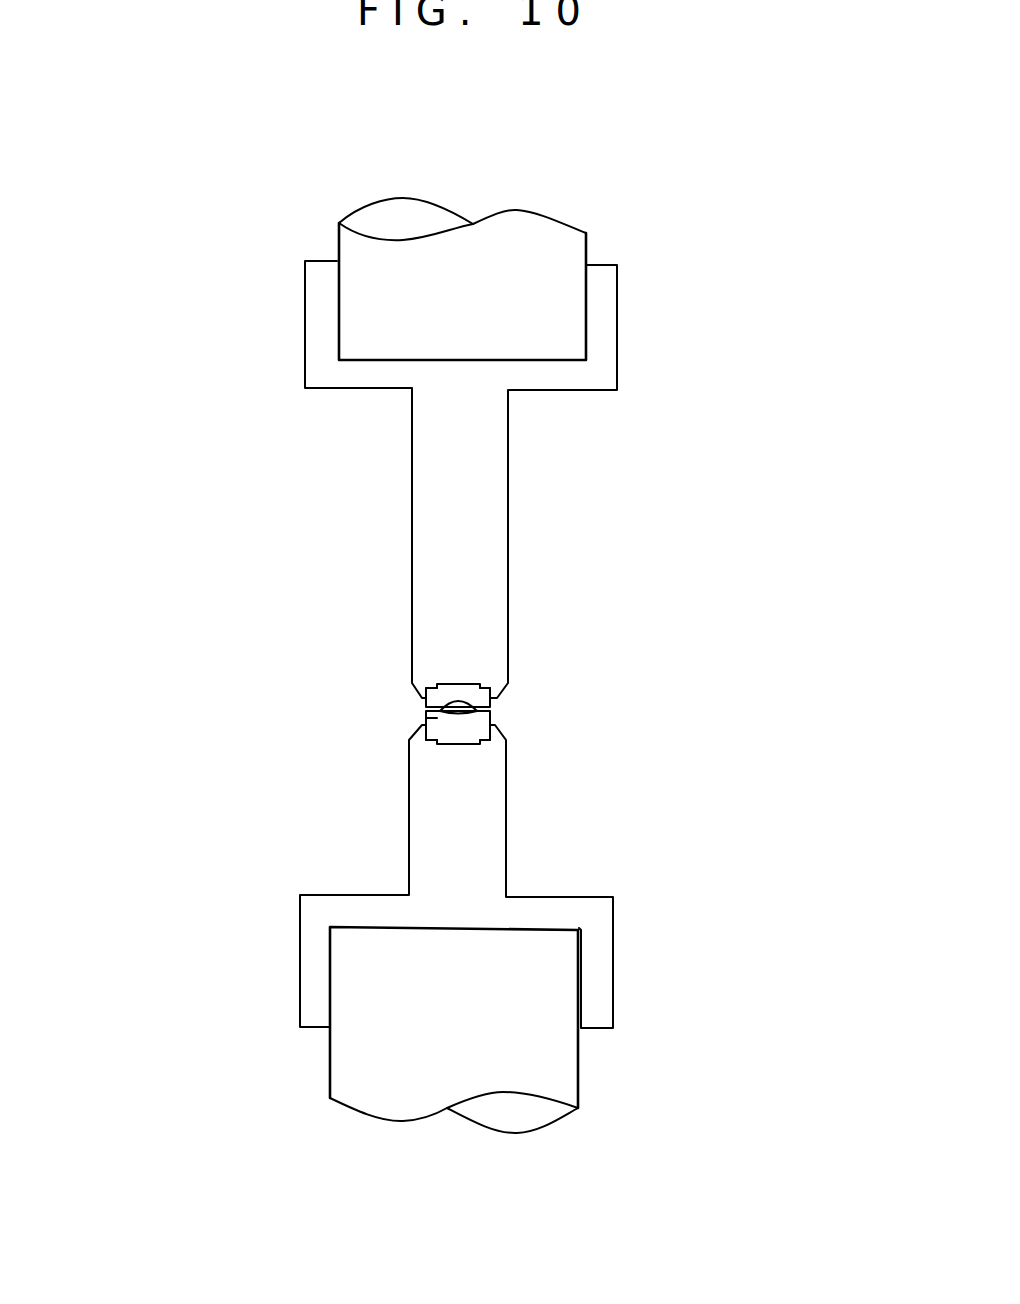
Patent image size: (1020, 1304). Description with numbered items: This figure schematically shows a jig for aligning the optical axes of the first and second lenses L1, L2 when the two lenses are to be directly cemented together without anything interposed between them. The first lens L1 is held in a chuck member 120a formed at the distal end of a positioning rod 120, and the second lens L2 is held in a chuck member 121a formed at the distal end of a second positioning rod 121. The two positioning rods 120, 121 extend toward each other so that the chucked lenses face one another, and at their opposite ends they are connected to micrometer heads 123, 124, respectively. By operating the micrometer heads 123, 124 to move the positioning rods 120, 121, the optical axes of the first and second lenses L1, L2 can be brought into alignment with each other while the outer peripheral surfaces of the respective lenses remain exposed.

The positioning rod 120 is at (435, 532).
The chuck member 120a is at (482, 703).
The positioning rod 121 is at (437, 838).
The chuck member 121a is at (474, 738).
The micrometer head 123 is at (548, 255).
The micrometer head 124 is at (353, 1063).
The first lens L1 is at (422, 697).
The second lens L2 is at (447, 725).